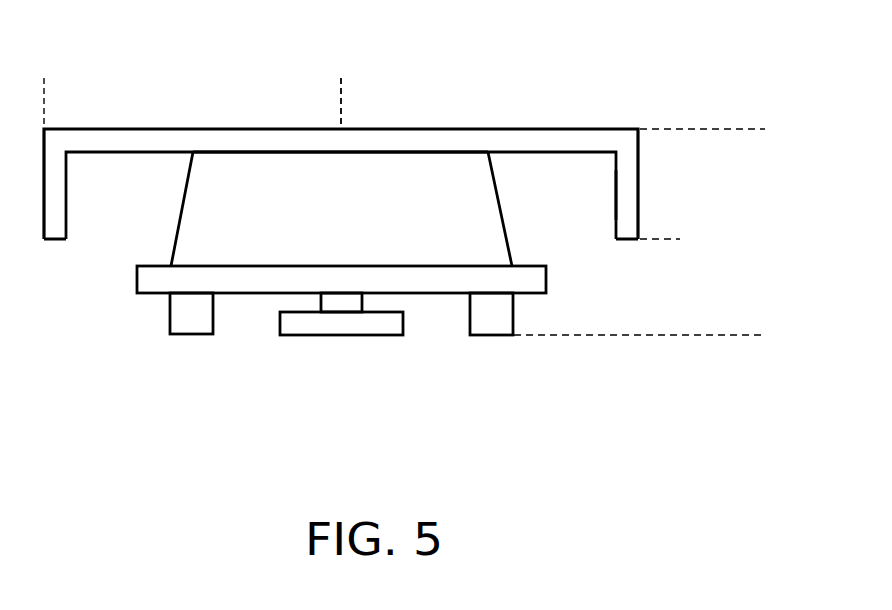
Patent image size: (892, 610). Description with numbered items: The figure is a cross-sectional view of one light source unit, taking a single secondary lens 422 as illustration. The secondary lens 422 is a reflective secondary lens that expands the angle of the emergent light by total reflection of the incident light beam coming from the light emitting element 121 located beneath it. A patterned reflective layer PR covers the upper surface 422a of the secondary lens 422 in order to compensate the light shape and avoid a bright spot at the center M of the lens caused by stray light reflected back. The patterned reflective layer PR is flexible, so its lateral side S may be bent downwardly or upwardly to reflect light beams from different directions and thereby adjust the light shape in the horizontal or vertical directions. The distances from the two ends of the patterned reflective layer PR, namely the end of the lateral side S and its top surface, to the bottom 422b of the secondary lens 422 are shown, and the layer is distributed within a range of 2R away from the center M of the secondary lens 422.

The light emitting element 121 is at (346, 325).
The secondary lens 422 is at (465, 178).
The upper surface 422a is at (375, 151).
The bottom 422b is at (489, 336).
The patterned reflective layer PR is at (553, 140).
The lateral side S is at (639, 192).
The center M is at (341, 85).
The distribution range 2R is at (44, 92).